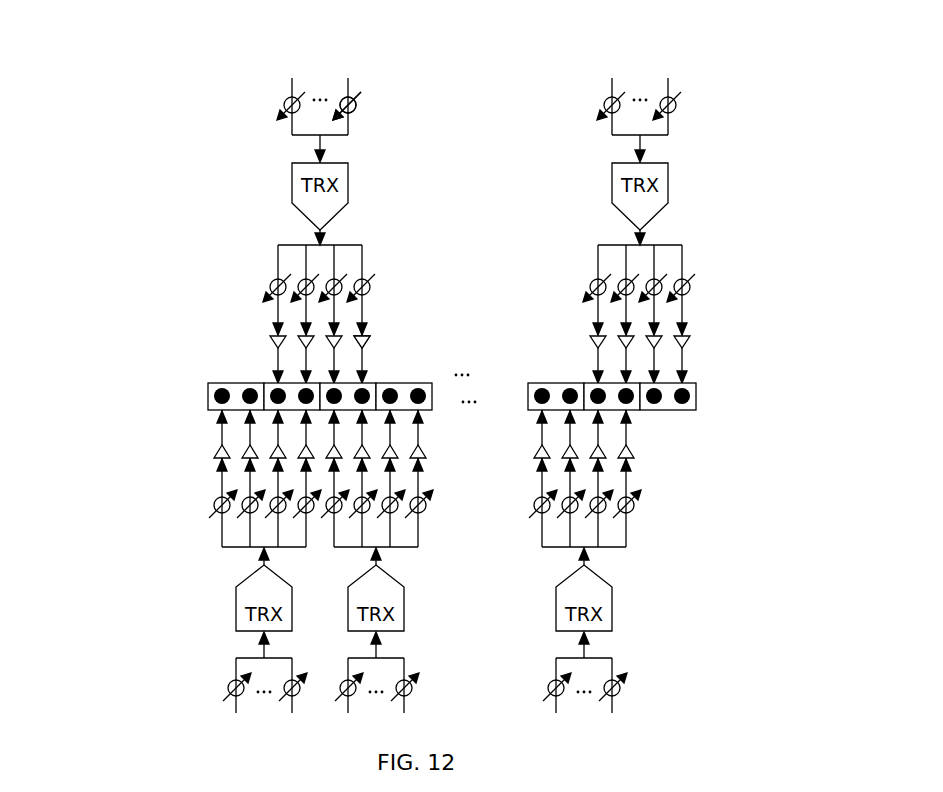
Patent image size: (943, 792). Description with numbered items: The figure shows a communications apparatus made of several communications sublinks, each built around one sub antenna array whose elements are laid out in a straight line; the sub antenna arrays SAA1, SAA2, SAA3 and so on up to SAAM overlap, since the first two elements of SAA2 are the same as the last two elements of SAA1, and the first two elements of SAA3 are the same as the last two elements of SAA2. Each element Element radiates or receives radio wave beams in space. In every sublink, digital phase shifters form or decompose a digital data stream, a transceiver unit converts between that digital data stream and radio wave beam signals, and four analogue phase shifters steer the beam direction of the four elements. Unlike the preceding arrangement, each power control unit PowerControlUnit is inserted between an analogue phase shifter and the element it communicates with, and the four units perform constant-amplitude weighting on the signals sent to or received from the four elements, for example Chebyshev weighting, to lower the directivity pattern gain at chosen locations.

The power control unit PowerControlUnit is at (453, 309).
The element Element is at (167, 361).
The sub antenna array SAA1 is at (170, 366).
The sub antenna array SAA2 is at (269, 373).
The sub antenna array SAA3 is at (403, 406).
The sub antenna array SAAM is at (697, 384).